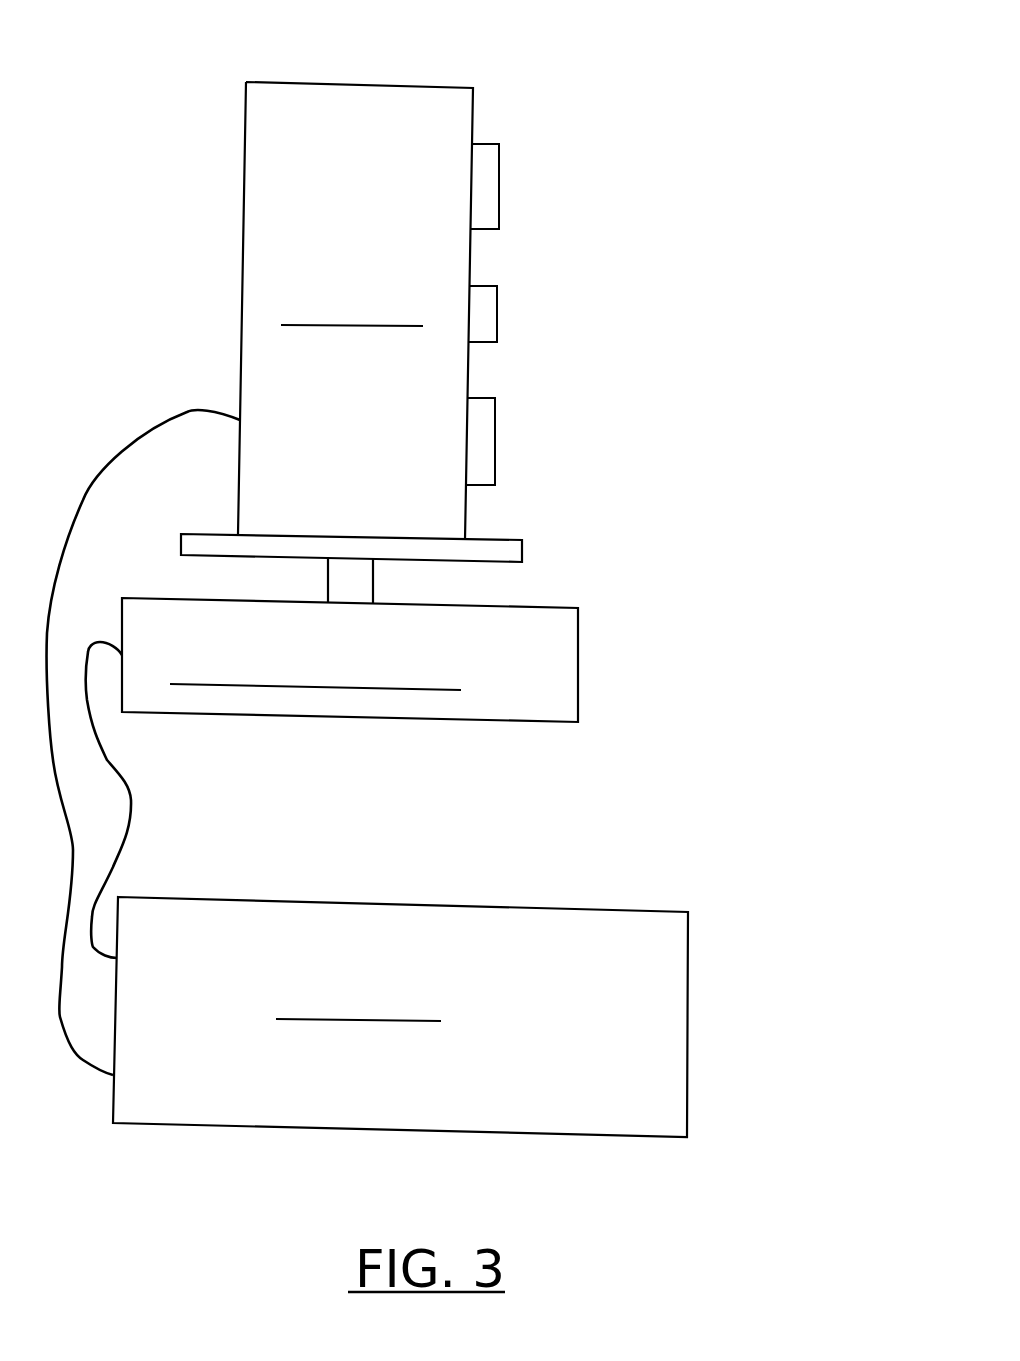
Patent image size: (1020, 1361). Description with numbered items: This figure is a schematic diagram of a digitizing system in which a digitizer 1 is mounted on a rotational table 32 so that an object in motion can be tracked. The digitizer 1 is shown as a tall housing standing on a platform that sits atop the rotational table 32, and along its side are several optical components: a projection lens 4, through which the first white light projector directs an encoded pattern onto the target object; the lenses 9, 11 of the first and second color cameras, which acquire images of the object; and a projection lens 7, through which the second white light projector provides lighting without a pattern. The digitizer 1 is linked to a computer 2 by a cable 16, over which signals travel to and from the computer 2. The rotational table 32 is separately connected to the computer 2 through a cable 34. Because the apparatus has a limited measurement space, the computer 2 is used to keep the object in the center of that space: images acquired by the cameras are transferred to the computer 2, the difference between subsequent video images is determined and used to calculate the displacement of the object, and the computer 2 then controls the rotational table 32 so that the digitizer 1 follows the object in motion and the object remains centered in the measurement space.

The digitizer 1 is at (273, 127).
The projection lens 4 is at (490, 165).
The lens 9 is at (548, 298).
The lens 11 is at (488, 307).
The projection lens 7 is at (486, 433).
The cable 16 is at (182, 410).
The rotational table 32 is at (532, 655).
The cable 34 is at (120, 845).
The computer 2 is at (255, 1097).